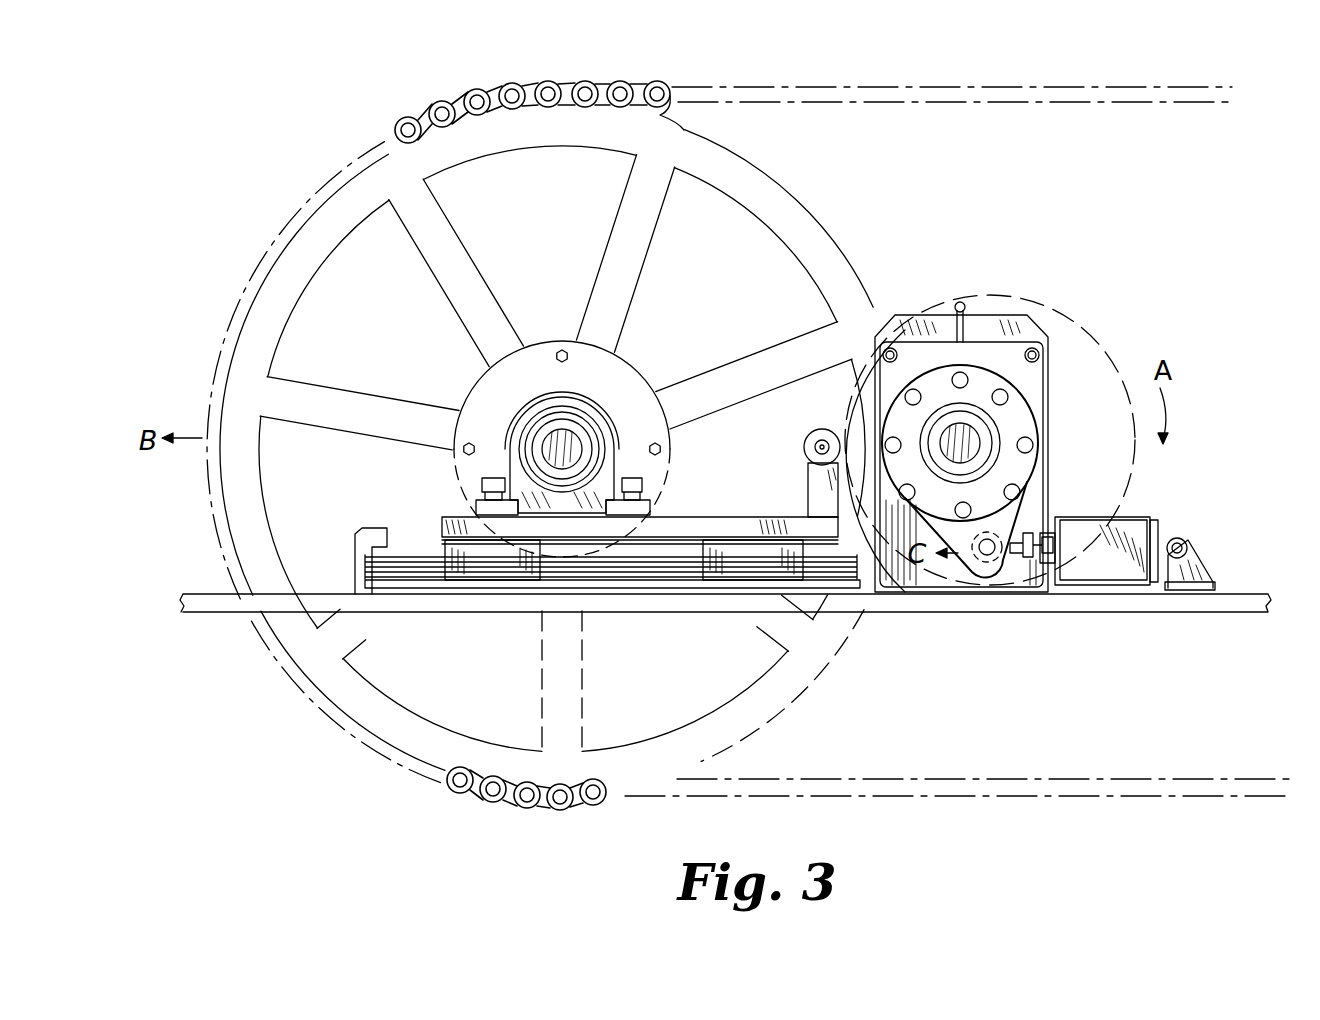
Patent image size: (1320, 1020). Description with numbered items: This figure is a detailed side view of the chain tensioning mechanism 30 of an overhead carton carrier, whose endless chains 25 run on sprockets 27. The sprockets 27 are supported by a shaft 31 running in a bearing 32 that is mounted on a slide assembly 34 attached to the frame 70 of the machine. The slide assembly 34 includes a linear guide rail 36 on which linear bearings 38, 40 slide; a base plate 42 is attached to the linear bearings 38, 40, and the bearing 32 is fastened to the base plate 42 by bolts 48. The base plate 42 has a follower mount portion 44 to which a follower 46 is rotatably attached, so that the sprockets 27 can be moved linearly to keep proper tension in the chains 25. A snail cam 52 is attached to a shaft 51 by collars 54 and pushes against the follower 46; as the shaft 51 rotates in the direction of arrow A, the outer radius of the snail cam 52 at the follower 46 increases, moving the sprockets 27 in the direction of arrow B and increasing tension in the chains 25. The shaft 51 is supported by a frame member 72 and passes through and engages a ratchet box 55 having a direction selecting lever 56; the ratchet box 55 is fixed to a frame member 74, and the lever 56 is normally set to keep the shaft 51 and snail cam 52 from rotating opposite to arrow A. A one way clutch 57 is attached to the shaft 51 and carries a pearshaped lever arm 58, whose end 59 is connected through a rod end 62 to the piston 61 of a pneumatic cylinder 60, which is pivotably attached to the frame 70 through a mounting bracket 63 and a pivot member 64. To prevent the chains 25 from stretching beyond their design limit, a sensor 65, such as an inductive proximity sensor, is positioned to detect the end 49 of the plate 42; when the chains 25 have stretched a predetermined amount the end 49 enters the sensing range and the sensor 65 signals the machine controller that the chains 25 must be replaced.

The endless chains 25 is at (552, 84).
The sprockets 27 is at (838, 242).
The chain tensioning mechanism 30 is at (983, 270).
The shaft 31 is at (552, 440).
The bearing 32 is at (592, 410).
The slide assembly 34 is at (410, 474).
The linear guide rail 36 is at (382, 596).
The linear bearing 38 is at (490, 578).
The linear bearing 40 is at (740, 580).
The base plate 42 is at (742, 518).
The follower mount portion 44 is at (808, 490).
The follower 46 is at (804, 443).
The bolts 48 is at (478, 486).
The end 49 is at (442, 526).
The shaft 51 is at (966, 456).
The snail cam 52 is at (1118, 334).
The collars 54 is at (1038, 440).
The ratchet box 55 is at (934, 332).
The direction selecting lever 56 is at (960, 301).
The one way clutch 57 is at (1036, 421).
The pearshaped lever arm 58 is at (1028, 484).
The end 59 is at (986, 565).
The pneumatic cylinder 60 is at (1140, 517).
The piston 61 is at (1048, 530).
The rod end 62 is at (1042, 566).
The mounting bracket 63 is at (1215, 584).
The pivot member 64 is at (1186, 540).
The sensor 65 is at (370, 528).
The frame 70 is at (648, 613).
The frame member 72 is at (882, 596).
The frame member 74 is at (1046, 336).